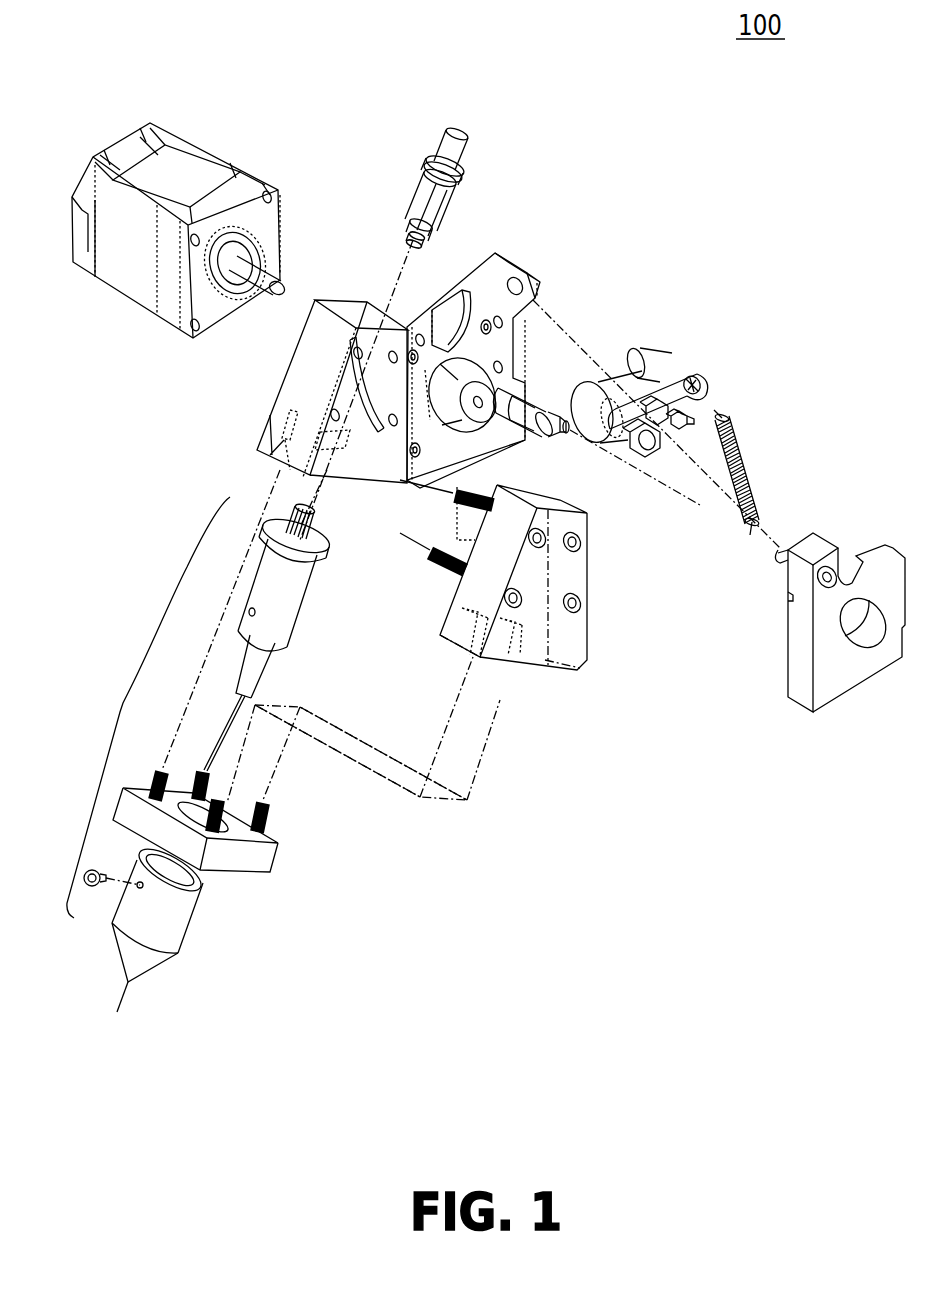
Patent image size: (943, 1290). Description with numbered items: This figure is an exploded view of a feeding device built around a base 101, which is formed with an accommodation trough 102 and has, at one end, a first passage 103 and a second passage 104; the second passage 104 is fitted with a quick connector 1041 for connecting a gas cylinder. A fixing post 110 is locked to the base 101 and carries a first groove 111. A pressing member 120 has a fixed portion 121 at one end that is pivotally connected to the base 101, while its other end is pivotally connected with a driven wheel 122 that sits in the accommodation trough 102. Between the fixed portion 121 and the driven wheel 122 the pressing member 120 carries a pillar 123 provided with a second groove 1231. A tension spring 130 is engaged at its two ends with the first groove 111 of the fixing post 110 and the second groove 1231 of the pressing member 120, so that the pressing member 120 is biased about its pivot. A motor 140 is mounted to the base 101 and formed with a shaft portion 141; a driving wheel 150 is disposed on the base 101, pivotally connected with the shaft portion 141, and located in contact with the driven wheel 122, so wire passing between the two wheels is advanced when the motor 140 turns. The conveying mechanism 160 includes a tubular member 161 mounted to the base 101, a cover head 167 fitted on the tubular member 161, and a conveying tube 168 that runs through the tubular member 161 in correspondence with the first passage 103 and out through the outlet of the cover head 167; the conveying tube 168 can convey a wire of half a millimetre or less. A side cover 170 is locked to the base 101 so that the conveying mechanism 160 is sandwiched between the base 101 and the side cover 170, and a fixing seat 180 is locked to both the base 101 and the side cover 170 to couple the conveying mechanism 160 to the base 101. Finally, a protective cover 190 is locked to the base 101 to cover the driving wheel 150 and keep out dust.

The base 101 is at (498, 265).
The accommodation trough 102 is at (440, 329).
The first passage 103 is at (362, 440).
The second passage 104 is at (350, 402).
The quick connector 1041 is at (430, 197).
The fixing post 110 is at (532, 437).
The first groove 111 is at (540, 421).
The pressing member 120 is at (690, 369).
The fixed portion 121 is at (660, 357).
The driven wheel 122 is at (607, 396).
The pillar 123 is at (688, 410).
The second groove 1231 is at (680, 445).
The tension spring 130 is at (750, 466).
The motor 140 is at (208, 167).
The shaft portion 141 is at (268, 266).
The driving wheel 150 is at (488, 363).
The conveying mechanism 160 is at (124, 703).
The tubular member 161 is at (282, 629).
The cover head 167 is at (178, 929).
The conveying tube 168 is at (225, 743).
The side cover 170 is at (545, 662).
The fixing seat 180 is at (268, 856).
The protective cover 190 is at (838, 690).